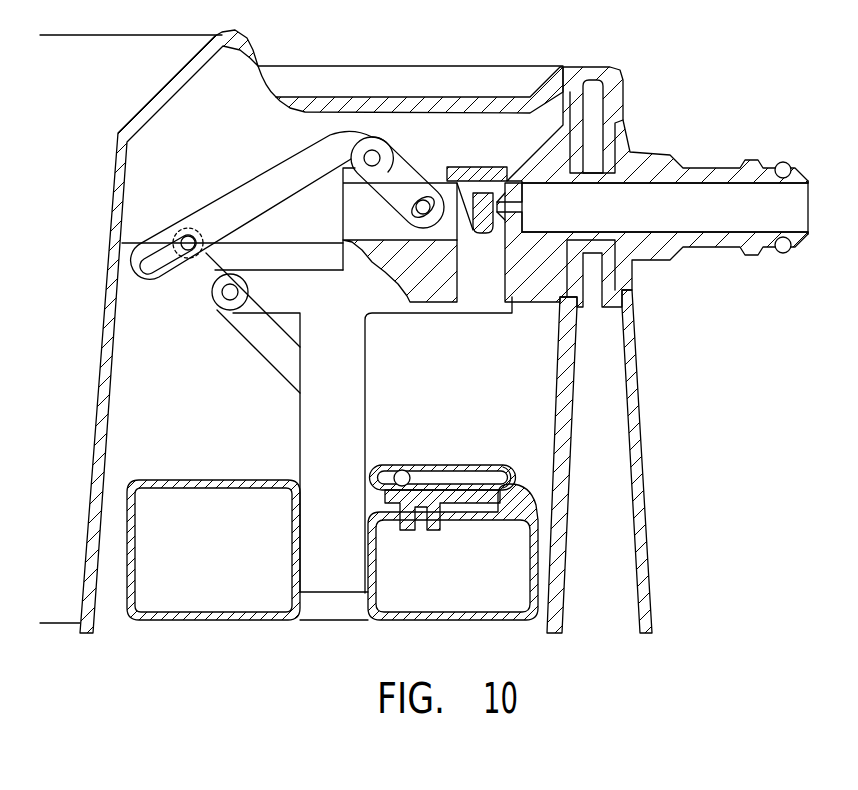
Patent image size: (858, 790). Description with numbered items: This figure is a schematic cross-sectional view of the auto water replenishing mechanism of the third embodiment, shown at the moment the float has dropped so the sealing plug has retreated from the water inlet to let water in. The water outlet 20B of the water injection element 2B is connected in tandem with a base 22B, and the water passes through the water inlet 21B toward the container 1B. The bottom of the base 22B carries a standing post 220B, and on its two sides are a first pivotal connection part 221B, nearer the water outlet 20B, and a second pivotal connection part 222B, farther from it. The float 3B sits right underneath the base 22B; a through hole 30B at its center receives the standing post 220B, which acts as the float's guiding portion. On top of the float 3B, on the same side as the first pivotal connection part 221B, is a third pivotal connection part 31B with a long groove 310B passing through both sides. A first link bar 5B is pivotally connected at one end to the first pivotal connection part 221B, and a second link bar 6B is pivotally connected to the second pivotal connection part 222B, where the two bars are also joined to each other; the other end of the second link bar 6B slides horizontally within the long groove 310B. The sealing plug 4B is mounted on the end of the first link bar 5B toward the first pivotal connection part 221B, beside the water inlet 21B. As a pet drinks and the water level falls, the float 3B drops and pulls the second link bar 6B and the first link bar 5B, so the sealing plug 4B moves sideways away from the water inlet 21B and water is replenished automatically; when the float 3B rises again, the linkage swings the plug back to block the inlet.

The container 1B is at (652, 478).
The water injection element 2B is at (637, 177).
The water outlet 20B is at (752, 168).
The water inlet 21B is at (527, 205).
The base 22B is at (376, 295).
The standing post 220B is at (300, 463).
The first pivotal connection part 221B is at (411, 150).
The second pivotal connection part 222B is at (213, 302).
The float 3B is at (462, 620).
The through hole 30B is at (350, 607).
The third pivotal connection part 31B is at (498, 465).
The long groove 310B is at (436, 467).
The sealing plug 4B is at (483, 180).
The first link bar 5B is at (233, 212).
The second link bar 6B is at (252, 342).